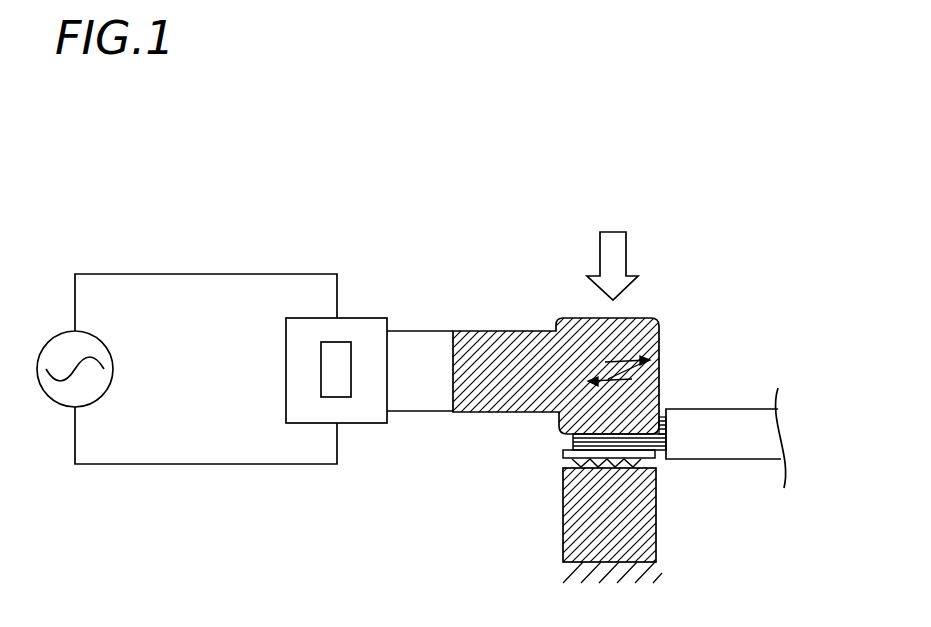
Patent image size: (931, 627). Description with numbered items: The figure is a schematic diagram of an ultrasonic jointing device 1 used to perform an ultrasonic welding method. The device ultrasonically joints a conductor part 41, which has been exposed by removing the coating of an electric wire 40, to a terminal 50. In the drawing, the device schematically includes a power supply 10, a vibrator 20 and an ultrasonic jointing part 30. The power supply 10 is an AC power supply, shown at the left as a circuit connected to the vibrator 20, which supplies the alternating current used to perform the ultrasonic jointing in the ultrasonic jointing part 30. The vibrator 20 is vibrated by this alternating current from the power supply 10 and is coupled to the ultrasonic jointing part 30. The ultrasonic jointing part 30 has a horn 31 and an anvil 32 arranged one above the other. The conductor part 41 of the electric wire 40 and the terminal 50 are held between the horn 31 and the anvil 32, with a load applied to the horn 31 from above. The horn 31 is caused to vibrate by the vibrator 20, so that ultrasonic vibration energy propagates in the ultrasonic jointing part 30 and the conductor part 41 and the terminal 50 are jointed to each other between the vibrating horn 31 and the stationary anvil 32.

The ultrasonic jointing device 1 is at (490, 186).
The power supply 10 is at (58, 332).
The vibrator 20 is at (346, 383).
The ultrasonic jointing part 30 is at (527, 466).
The horn 31 is at (577, 318).
The anvil 32 is at (657, 532).
The electric wire 40 is at (738, 417).
The conductor part 41 is at (572, 441).
The terminal 50 is at (656, 457).